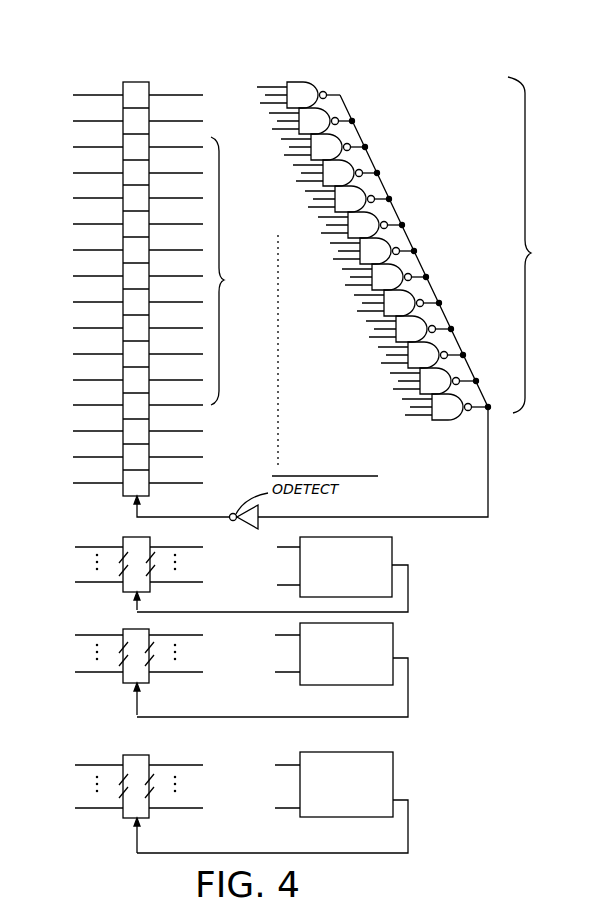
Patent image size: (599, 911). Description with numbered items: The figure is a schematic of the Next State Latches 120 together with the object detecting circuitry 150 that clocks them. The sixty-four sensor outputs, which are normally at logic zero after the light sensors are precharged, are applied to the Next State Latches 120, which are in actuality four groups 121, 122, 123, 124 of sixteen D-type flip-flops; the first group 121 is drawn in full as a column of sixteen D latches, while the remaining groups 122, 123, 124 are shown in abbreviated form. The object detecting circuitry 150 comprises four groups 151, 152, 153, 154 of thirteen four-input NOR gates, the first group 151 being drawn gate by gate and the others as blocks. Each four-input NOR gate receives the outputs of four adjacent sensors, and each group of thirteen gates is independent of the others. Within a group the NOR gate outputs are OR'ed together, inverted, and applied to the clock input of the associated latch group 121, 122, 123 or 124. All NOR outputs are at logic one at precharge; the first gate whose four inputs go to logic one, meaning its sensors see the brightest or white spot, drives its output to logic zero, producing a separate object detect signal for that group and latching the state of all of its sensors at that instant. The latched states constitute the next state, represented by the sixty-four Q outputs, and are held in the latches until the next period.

The Next State Latches 120 is at (195, 36).
The group of 16 D-type flip-flops 121 is at (234, 271).
The group of 16 D-type flip-flops 122 is at (122, 540).
The group of 16 D-type flip-flops 123 is at (122, 632).
The group of 16 D-type flip-flops 124 is at (122, 758).
The object detecting circuitry 150 is at (329, 74).
The group of 13 four input NOR gates 151 is at (538, 245).
The group of 13 four input NOR gates 152 is at (390, 554).
The group of 13 four input NOR gates 153 is at (389, 643).
The group of 13 four input NOR gates 154 is at (393, 772).